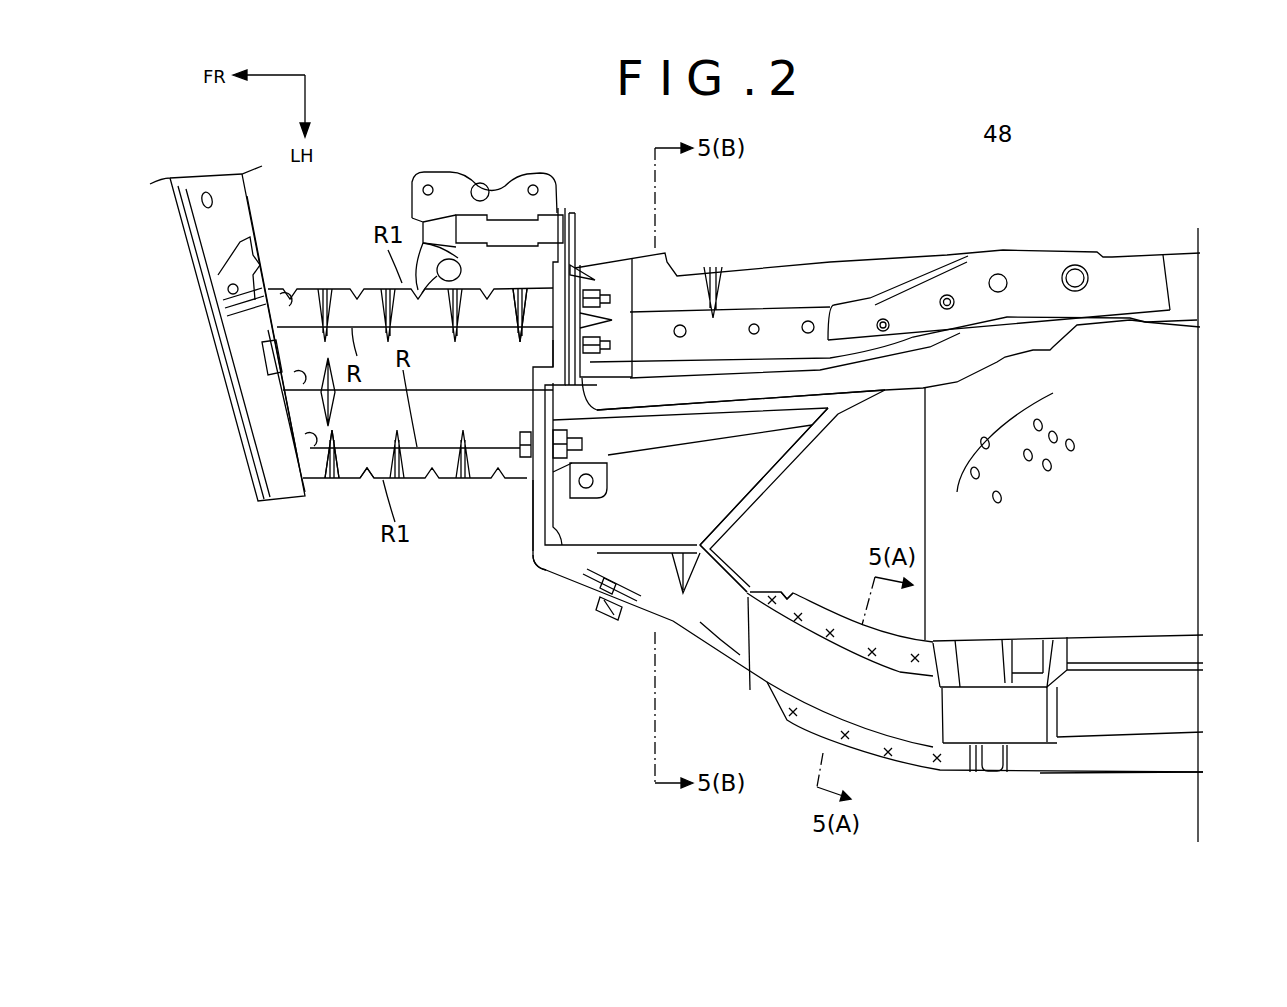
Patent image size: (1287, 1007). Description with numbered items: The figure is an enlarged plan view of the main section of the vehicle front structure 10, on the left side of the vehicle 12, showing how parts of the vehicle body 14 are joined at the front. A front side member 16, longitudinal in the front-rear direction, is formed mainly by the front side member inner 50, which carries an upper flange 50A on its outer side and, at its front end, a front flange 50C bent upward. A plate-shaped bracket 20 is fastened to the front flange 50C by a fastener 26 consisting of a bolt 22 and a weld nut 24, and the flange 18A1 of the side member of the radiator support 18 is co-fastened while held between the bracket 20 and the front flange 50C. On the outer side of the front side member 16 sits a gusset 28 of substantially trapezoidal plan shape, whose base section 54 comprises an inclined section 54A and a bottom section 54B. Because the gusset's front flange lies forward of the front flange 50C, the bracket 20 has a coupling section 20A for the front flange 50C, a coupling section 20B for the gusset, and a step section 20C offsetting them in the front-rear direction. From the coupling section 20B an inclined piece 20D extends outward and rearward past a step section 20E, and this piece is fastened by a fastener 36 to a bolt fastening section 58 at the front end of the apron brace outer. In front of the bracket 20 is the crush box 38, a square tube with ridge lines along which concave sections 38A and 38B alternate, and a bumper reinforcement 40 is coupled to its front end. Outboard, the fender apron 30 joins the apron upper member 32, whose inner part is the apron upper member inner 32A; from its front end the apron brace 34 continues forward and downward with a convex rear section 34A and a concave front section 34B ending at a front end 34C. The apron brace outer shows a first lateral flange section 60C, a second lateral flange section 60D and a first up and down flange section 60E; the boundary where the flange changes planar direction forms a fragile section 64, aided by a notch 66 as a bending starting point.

The vehicle front structure 10 is at (467, 635).
The vehicle 12 is at (347, 666).
The vehicle body 14 is at (1088, 787).
The front side member 16 is at (1060, 254).
The radiator support 18 is at (535, 175).
The flange 18A1 is at (557, 267).
The bracket 20 is at (530, 543).
The coupling section 20A is at (547, 329).
The coupling section 20B is at (530, 507).
The step section 20C is at (548, 360).
The inclined piece 20D is at (590, 578).
The step section 20E is at (543, 562).
The bolt 22 is at (615, 295).
The weld nut 24 is at (605, 293).
The fastener 26 is at (575, 183).
The gusset 28 is at (720, 486).
The fender apron 30 is at (1170, 408).
The apron upper member 32 is at (1142, 774).
The apron upper member inner 32A is at (998, 722).
The apron brace 34 is at (803, 732).
The rear section 34A is at (903, 712).
The front section 34B is at (703, 622).
The front end 34C is at (648, 565).
The fastener 36 is at (610, 606).
The crush box 38 is at (343, 288).
The concave section 38A is at (337, 481).
The concave section 38B is at (364, 482).
The bumper reinforcement 40 is at (277, 474).
The front side member inner 50 is at (857, 283).
The upper flange 50A is at (793, 380).
The front flange 50C is at (583, 368).
The base section 54 is at (880, 462).
The inclined section 54A is at (735, 424).
The bottom section 54B is at (752, 467).
The bolt fastening section 58 is at (628, 622).
The first lateral flange section 60C is at (845, 622).
The second lateral flange section 60D is at (937, 771).
The first up and down flange section 60E is at (720, 567).
The fragile section 64 is at (750, 690).
The notch 66 is at (790, 595).